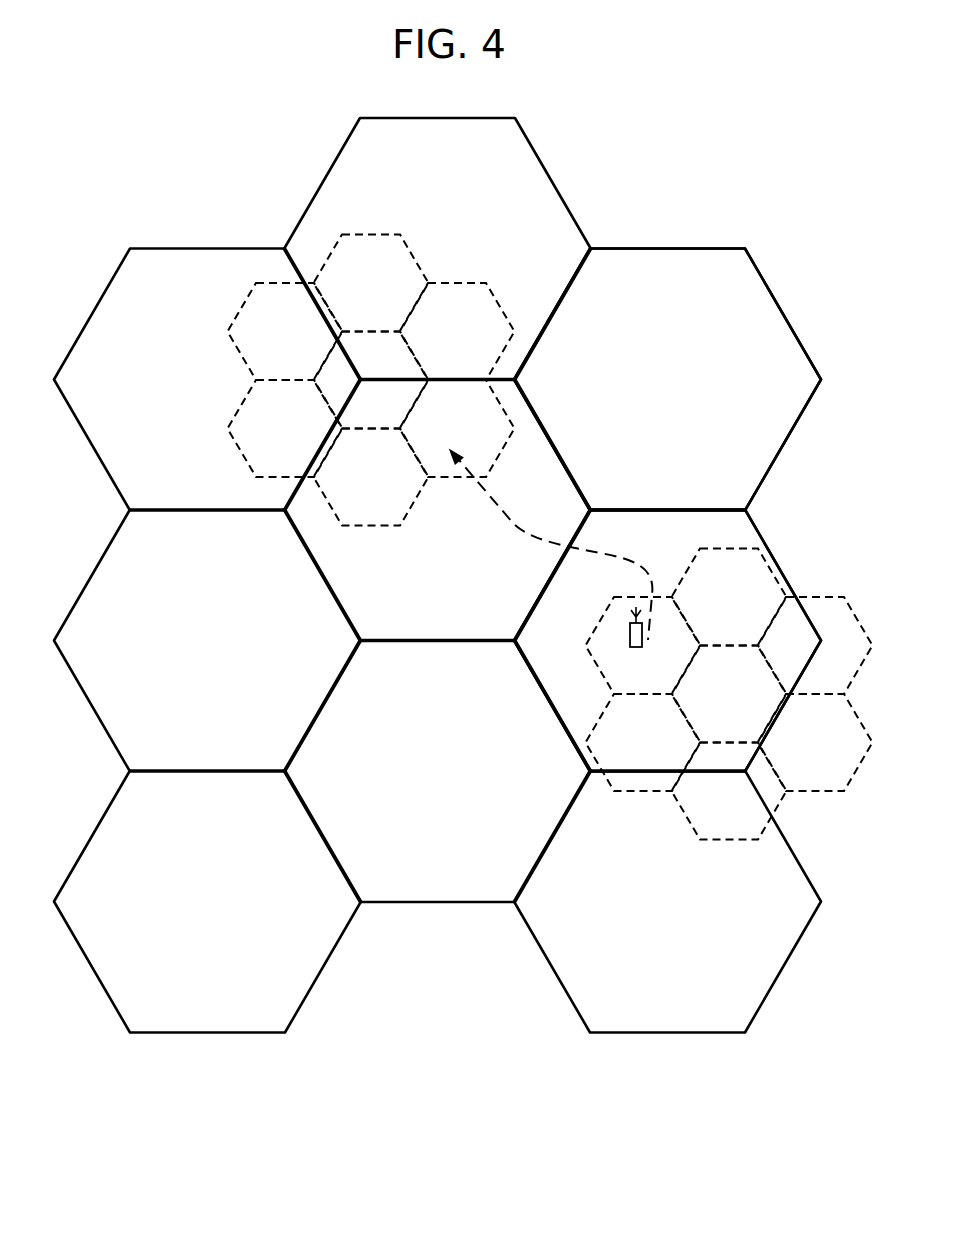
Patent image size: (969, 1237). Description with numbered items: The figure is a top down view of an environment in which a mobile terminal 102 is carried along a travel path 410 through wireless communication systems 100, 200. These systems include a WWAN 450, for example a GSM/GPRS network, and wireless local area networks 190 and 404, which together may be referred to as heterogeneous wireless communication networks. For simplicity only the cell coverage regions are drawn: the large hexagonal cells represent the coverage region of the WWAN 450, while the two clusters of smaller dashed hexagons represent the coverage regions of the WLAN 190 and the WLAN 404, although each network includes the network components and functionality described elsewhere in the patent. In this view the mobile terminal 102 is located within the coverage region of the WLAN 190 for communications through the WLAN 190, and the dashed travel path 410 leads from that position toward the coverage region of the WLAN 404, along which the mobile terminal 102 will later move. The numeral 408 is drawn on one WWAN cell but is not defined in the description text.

The wireless communication system 100 is at (468, 1020).
The wireless communication system 200 is at (437, 581).
The mobile terminal 102 is at (630, 647).
The wireless local area network 190 is at (801, 565).
The wireless local area network 404 is at (451, 256).
The macro cell 408 is at (757, 521).
The travel path 410 is at (522, 527).
The WWAN 450 is at (786, 270).